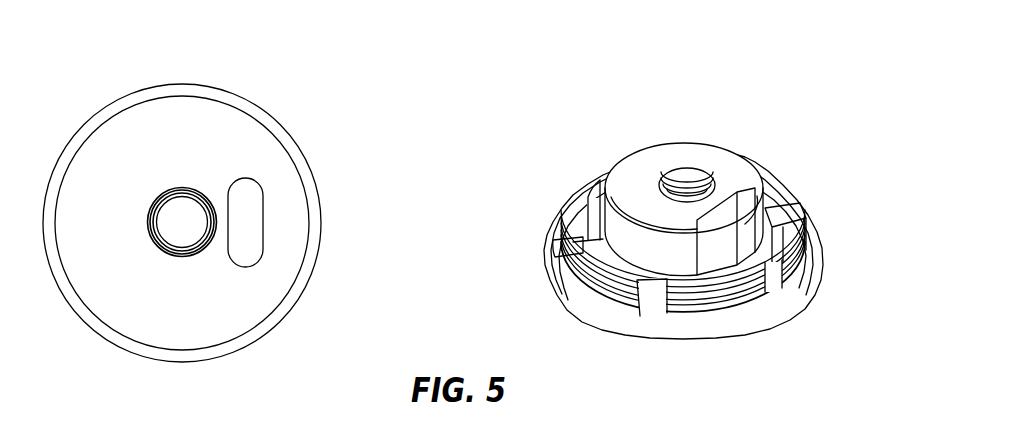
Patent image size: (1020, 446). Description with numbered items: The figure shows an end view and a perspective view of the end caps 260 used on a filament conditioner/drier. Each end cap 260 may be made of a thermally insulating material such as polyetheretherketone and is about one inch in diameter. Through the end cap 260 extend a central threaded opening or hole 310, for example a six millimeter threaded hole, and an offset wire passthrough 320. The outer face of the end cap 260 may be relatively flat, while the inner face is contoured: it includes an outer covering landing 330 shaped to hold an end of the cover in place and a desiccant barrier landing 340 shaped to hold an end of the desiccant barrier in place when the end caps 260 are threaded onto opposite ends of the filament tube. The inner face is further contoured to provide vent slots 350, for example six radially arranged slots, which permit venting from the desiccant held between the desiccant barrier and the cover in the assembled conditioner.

The end cap 260 is at (155, 86).
The central threaded opening 310 is at (167, 217).
The offset wire passthrough 320 is at (250, 222).
The outer covering landing 330 is at (556, 241).
The desiccant barrier landing 340 is at (588, 194).
The vent slot 350 is at (800, 293).